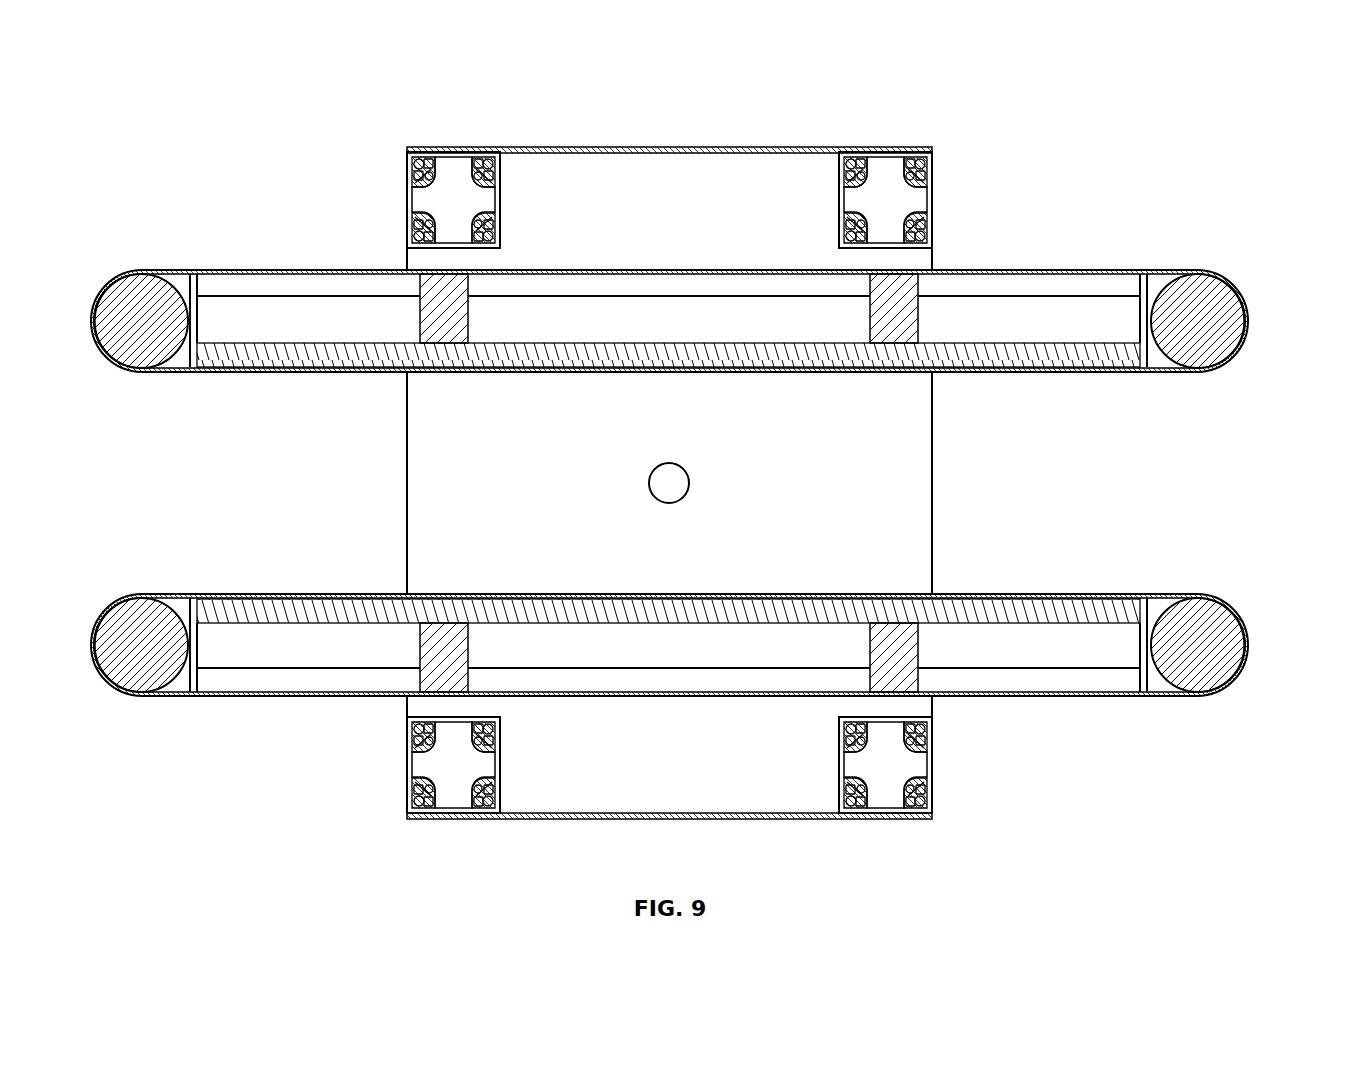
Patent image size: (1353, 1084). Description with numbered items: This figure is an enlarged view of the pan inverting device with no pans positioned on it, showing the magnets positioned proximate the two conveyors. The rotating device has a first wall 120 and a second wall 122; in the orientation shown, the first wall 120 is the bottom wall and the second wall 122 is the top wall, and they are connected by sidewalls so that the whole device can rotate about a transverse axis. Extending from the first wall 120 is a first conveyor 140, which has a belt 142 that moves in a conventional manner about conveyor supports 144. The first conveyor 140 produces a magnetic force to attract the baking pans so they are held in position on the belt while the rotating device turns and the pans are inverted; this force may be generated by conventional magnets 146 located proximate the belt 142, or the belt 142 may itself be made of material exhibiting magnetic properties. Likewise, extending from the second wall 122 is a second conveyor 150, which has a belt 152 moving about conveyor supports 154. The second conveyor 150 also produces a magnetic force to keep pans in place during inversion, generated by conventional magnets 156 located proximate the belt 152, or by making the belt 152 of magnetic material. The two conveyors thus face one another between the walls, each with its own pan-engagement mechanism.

The first wall 120 is at (832, 820).
The second wall 122 is at (688, 147).
The first conveyor 140 is at (704, 650).
The belt 142 is at (1157, 596).
The conveyor supports 144 is at (1225, 650).
The magnets 146 is at (318, 614).
The second conveyor 150 is at (705, 308).
The belt 152 is at (1168, 372).
The conveyor supports 154 is at (1228, 321).
The magnets 156 is at (312, 343).